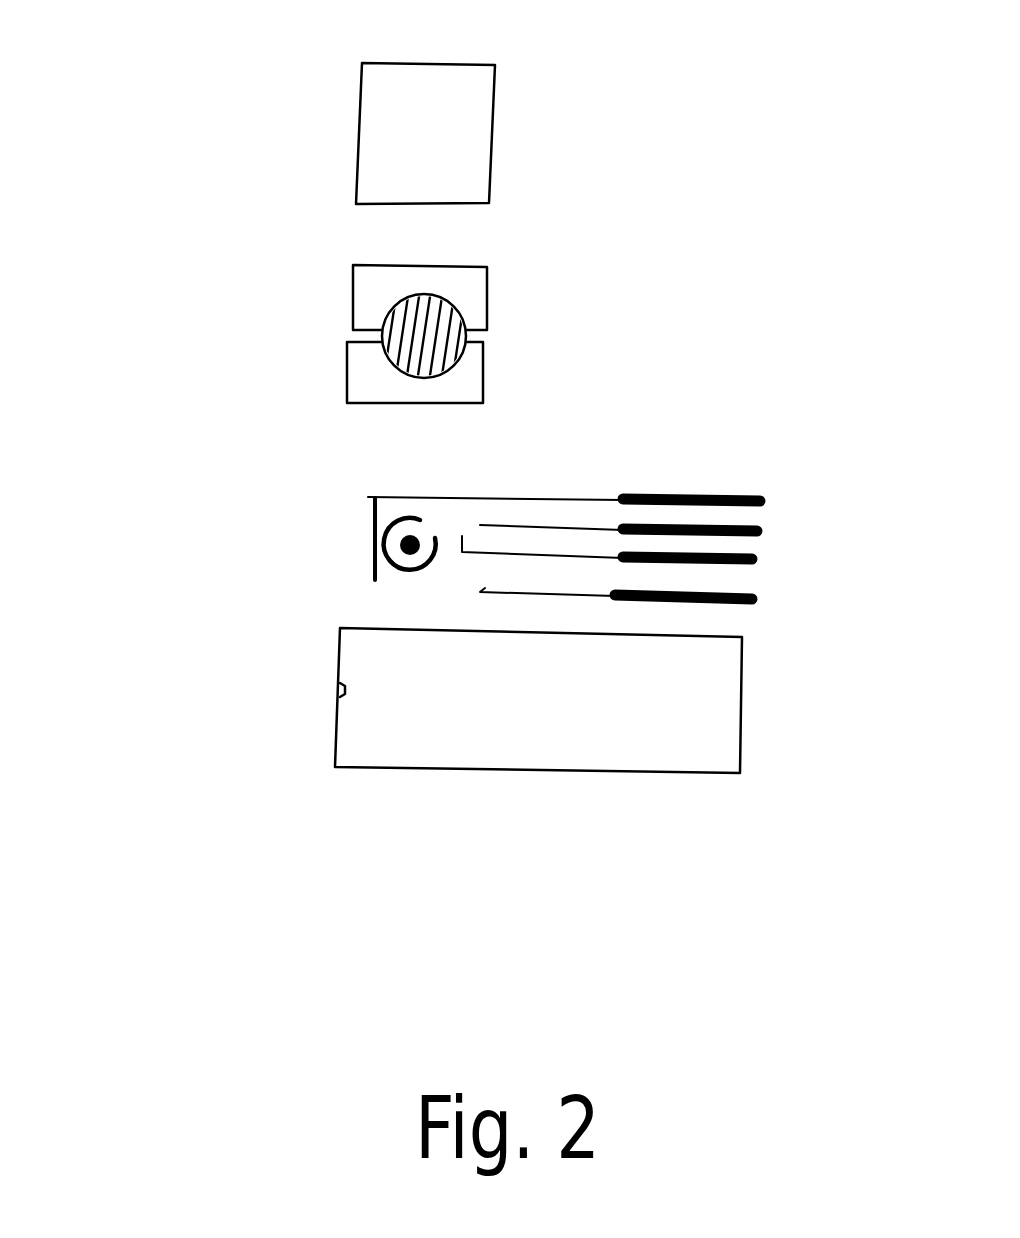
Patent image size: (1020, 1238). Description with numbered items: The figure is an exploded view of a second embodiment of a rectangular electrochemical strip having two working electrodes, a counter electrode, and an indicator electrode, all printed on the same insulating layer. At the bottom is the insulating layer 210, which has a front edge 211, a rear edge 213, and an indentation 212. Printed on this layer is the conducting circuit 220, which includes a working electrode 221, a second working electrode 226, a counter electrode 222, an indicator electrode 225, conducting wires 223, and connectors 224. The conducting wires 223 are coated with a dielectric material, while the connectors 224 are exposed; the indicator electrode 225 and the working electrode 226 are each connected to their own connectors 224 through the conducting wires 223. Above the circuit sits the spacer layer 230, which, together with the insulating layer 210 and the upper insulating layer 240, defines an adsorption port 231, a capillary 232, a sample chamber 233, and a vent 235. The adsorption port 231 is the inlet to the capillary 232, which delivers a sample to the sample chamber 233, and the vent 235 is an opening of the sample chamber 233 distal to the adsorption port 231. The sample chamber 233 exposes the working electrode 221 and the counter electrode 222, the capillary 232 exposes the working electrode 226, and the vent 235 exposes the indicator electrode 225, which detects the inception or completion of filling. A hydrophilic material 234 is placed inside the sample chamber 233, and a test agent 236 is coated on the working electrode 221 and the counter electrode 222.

The insulating layer 210 is at (457, 724).
The front edge 211 is at (330, 738).
The indentation 212 is at (343, 690).
The rear edge 213 is at (742, 720).
The conducting circuit 220 is at (447, 552).
The working electrode 221 is at (407, 535).
The counter electrode 222 is at (387, 535).
The conducting wires 223 is at (458, 497).
The connectors 224 is at (682, 493).
The indicator electrode 225 is at (437, 541).
The working electrode 226 is at (373, 563).
The spacer layer 230 is at (332, 325).
The adsorption port 231 is at (350, 338).
The capillary 232 is at (360, 343).
The sample chamber 233 is at (488, 324).
The hydrophilic material 234 is at (433, 350).
The vent 235 is at (478, 338).
The test agent 236 is at (393, 312).
The insulating layer 240 is at (287, 123).